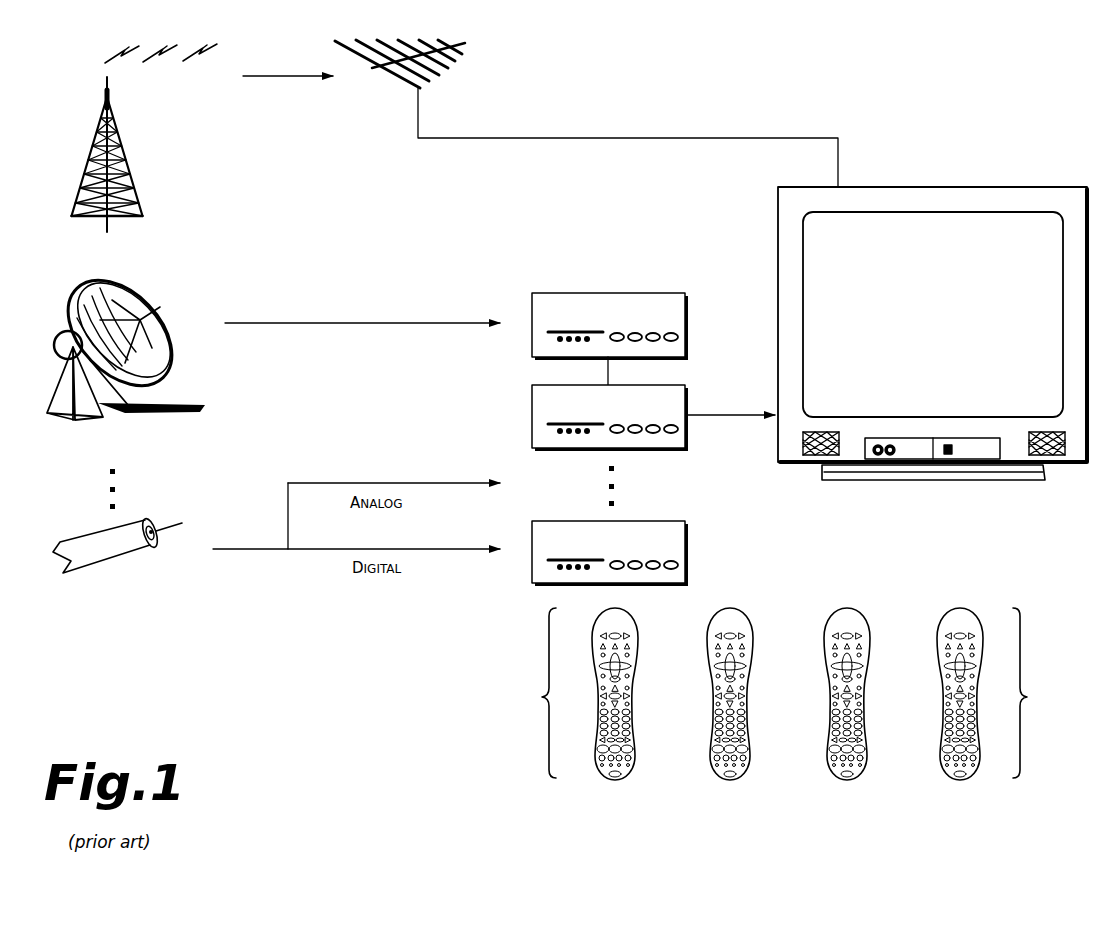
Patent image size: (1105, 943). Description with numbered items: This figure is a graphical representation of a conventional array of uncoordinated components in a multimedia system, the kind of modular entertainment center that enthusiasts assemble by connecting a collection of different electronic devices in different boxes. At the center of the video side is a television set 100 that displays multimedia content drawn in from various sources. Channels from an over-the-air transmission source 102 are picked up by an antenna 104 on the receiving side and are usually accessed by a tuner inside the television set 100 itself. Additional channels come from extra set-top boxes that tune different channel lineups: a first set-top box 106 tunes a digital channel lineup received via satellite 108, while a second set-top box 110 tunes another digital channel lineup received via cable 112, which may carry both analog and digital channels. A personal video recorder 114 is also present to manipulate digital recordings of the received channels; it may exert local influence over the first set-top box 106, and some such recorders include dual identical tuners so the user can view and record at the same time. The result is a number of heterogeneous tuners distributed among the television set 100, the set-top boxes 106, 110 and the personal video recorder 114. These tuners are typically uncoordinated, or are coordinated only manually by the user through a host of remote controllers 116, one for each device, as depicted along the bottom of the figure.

The television set 100 is at (960, 186).
The over-the-air transmission source 102 is at (128, 183).
The antenna 104 is at (452, 46).
The first set-top box 106 is at (652, 292).
The satellite 108 is at (150, 352).
The second set-top box 110 is at (652, 521).
The cable 112 is at (128, 557).
The personal video recorder 114 is at (652, 385).
The remote controllers 116 is at (545, 697).